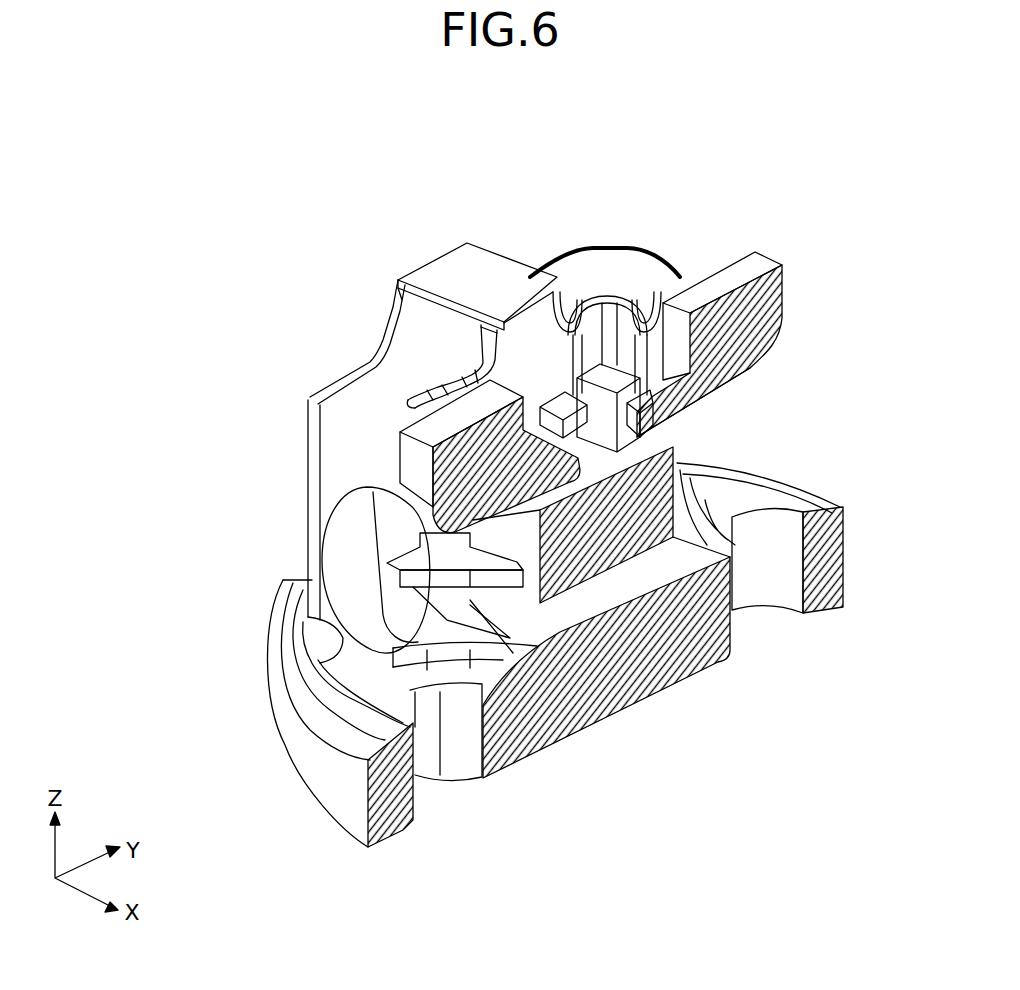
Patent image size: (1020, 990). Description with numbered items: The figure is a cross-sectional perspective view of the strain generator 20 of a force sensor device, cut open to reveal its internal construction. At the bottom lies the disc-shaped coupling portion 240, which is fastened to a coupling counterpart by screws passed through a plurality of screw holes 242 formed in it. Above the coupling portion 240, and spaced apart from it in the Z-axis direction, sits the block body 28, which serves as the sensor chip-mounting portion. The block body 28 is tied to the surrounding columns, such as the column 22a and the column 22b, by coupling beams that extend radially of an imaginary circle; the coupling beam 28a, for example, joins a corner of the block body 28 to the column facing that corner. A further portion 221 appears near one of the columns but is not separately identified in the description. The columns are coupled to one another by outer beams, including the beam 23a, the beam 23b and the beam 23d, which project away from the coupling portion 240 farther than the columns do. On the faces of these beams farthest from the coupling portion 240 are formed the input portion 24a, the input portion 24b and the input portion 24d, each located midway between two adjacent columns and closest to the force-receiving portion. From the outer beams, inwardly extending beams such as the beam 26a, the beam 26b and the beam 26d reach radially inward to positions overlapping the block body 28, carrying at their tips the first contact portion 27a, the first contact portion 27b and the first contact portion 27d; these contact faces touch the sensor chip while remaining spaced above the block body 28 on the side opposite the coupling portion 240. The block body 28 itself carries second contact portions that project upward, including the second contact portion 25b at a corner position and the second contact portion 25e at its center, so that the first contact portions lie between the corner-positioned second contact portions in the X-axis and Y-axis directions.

The strain generator 20 is at (160, 129).
The column 22a is at (285, 580).
The column 22b is at (608, 248).
The holder protrusion 221 is at (428, 530).
The beam 23a is at (390, 313).
The beam 23b is at (783, 320).
The beam 23d is at (433, 473).
The input portion 24a is at (468, 278).
The input portion 24b is at (730, 273).
The input portion 24d is at (465, 412).
The second contact portion 25b is at (602, 372).
The second contact portion 25e is at (640, 400).
The beam 26a is at (478, 363).
The beam 26b is at (665, 390).
The beam 26d is at (437, 500).
The first contact portion 27a is at (420, 282).
The first contact portion 27b is at (775, 300).
The first contact portion 27d is at (557, 445).
The block body 28 is at (613, 527).
The coupling beam 28a is at (477, 650).
The coupling portion 240 is at (300, 765).
The screw hole 242 is at (440, 720).